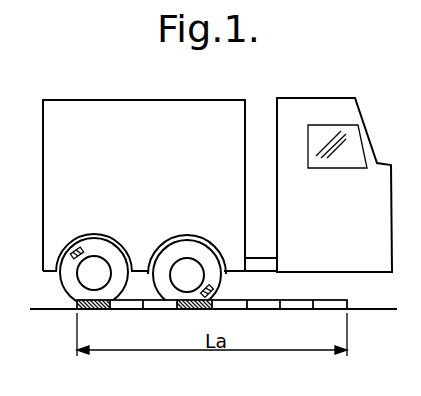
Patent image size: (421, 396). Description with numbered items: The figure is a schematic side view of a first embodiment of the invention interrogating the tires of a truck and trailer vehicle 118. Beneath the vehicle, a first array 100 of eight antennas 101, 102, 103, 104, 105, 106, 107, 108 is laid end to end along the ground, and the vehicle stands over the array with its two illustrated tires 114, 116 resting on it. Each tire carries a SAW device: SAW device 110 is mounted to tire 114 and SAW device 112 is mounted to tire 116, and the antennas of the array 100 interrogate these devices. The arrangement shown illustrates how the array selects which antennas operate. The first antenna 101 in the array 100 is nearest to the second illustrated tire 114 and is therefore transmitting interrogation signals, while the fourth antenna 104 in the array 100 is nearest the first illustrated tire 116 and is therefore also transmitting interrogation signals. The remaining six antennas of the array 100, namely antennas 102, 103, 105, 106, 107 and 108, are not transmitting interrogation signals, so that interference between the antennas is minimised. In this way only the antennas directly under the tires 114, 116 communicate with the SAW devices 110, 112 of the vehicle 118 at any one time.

The first array 100 is at (327, 298).
The first antenna 101 is at (82, 300).
The antenna 102 is at (122, 309).
The antenna 103 is at (160, 309).
The fourth antenna 104 is at (188, 309).
The antenna 105 is at (232, 299).
The antenna 106 is at (260, 309).
The antenna 107 is at (293, 309).
The antenna 108 is at (346, 301).
The SAW device 110 is at (77, 245).
The SAW device 112 is at (200, 288).
The tire 114 is at (106, 250).
The tire 116 is at (170, 248).
The truck and trailer vehicle 118 is at (103, 100).